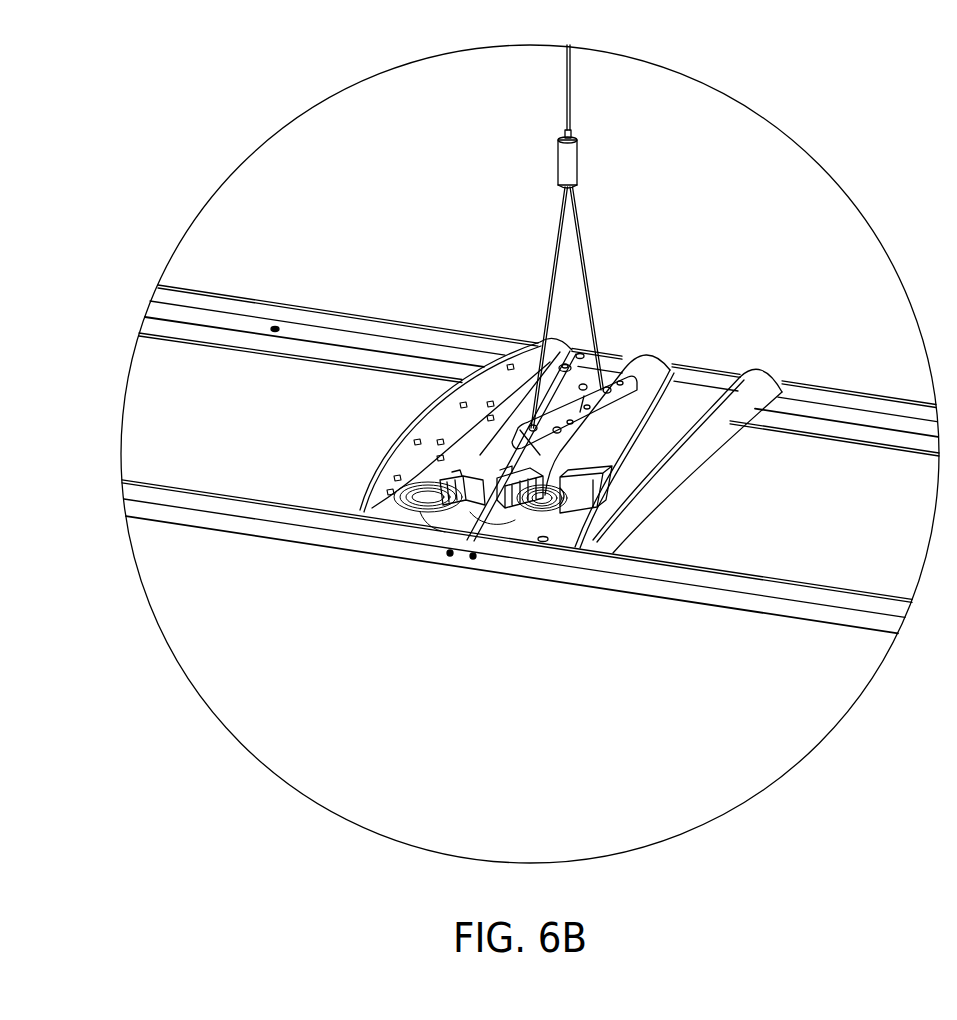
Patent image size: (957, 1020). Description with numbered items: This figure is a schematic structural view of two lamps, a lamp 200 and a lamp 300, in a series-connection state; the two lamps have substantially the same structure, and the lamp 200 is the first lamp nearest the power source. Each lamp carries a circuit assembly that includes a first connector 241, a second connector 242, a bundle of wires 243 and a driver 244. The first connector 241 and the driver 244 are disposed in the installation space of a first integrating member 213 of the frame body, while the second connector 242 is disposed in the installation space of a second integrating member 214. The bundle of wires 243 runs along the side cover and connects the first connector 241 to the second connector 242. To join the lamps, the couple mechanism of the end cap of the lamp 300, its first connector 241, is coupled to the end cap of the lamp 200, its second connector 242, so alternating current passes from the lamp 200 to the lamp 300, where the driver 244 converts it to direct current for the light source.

The lamp 200 is at (270, 235).
The lamp 300 is at (792, 340).
The driver 244 is at (697, 386).
The second integrating member 214 is at (393, 513).
The bundle of wires 243 is at (422, 518).
The second connector 242 is at (455, 510).
The first connector 241 is at (504, 508).
The first integrating member 213 is at (561, 536).